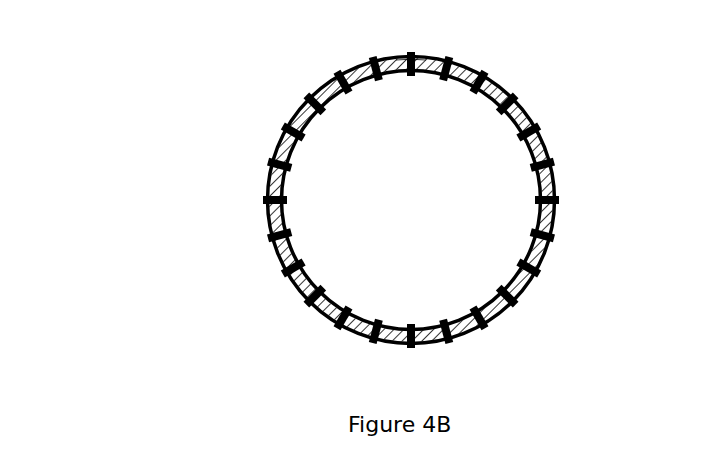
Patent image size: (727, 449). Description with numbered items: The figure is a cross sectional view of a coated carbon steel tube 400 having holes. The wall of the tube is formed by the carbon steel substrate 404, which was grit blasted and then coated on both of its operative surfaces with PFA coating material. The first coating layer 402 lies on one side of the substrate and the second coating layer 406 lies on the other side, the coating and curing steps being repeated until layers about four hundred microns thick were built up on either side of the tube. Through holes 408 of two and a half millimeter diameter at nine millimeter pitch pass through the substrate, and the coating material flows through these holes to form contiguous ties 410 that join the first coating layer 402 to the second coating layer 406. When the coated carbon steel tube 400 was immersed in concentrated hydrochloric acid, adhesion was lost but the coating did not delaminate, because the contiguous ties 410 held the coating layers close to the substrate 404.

The coated carbon steel tube 400 is at (367, 183).
The first coating layer 402 is at (487, 200).
The carbon steel substrate 404 is at (498, 82).
The second coating layer 406 is at (543, 82).
The through hole 408 is at (525, 292).
The contiguous ties 410 is at (353, 200).